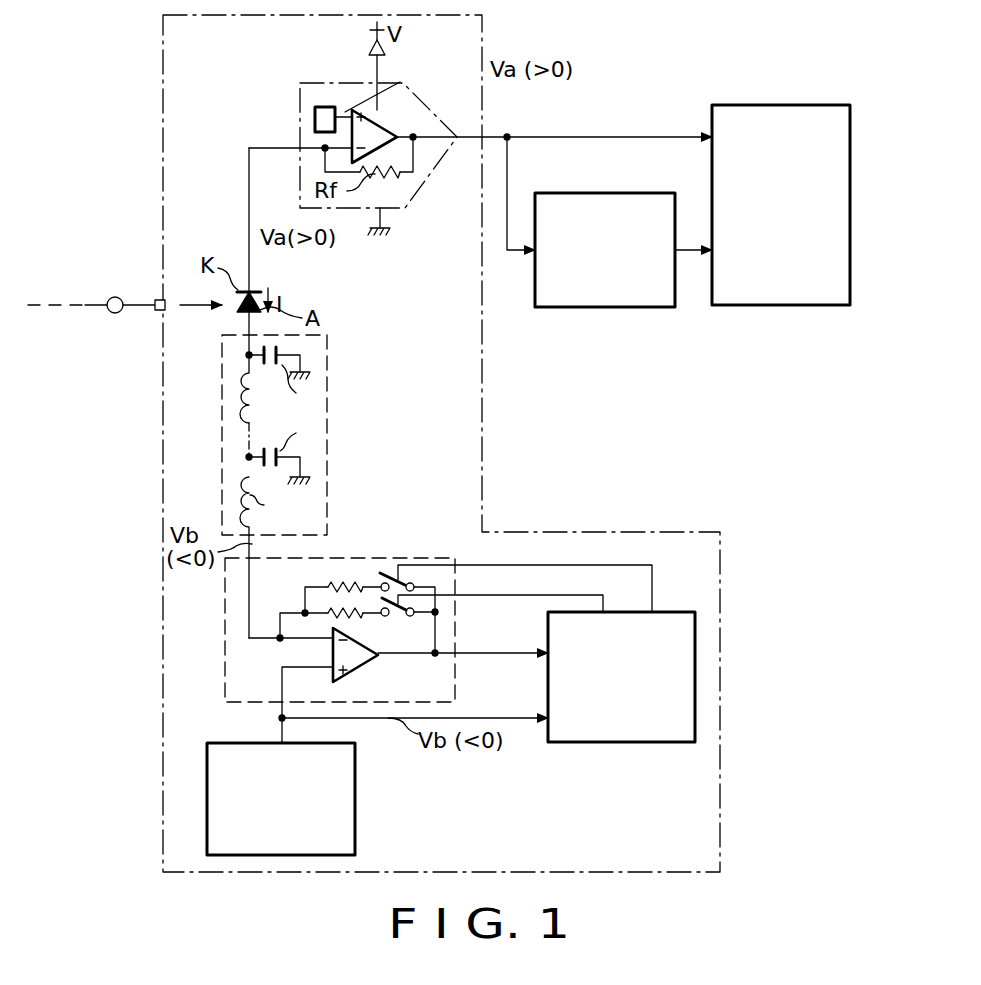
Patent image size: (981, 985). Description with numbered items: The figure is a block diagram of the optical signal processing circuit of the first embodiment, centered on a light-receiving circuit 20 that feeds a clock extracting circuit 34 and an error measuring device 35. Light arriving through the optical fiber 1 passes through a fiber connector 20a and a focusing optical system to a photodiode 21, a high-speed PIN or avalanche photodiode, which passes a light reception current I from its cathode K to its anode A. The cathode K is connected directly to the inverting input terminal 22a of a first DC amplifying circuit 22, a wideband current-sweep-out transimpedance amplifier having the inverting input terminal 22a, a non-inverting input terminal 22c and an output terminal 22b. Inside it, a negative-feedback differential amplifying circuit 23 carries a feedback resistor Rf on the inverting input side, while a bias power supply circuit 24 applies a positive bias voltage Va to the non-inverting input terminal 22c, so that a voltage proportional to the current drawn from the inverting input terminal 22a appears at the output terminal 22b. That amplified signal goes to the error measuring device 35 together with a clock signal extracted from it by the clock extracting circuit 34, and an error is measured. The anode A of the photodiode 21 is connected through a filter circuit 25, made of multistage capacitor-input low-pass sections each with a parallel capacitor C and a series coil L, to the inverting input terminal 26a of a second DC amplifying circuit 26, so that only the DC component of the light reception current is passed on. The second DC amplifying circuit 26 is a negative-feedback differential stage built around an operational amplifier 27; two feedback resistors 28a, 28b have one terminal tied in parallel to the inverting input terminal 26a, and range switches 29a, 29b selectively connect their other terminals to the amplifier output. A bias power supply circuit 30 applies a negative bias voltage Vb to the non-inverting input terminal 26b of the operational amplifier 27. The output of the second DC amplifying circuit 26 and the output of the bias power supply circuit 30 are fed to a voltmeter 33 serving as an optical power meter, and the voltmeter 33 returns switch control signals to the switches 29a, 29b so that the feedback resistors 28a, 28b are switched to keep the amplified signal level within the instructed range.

The optical fiber 1 is at (92, 303).
The light-receiving circuit 20 is at (486, 27).
The fiber connector 20a is at (154, 312).
The photodiode 21 is at (256, 291).
The first DC amplifying circuit 22 is at (298, 100).
The inverting input terminal 22a is at (276, 147).
The output terminal 22b is at (463, 141).
The non-inverting input terminal 22c is at (400, 82).
The negative-feedback differential amplifying circuit 23 is at (395, 128).
The bias power supply circuit 24 is at (330, 107).
The filter circuit 25 is at (330, 450).
The second DC amplifying circuit 26 is at (387, 558).
The inverting input terminal 26a is at (273, 649).
The non-inverting input terminal 26b is at (295, 665).
The operational amplifier 27 is at (360, 664).
The feedback resistor 28a is at (328, 598).
The feedback resistor 28b is at (352, 581).
The range switch 29a is at (395, 614).
The range switch 29b is at (400, 569).
The bias power supply circuit 30 is at (357, 785).
The voltmeter 33 is at (670, 743).
The clock extracting circuit 34 is at (653, 193).
The error measuring device 35 is at (814, 105).